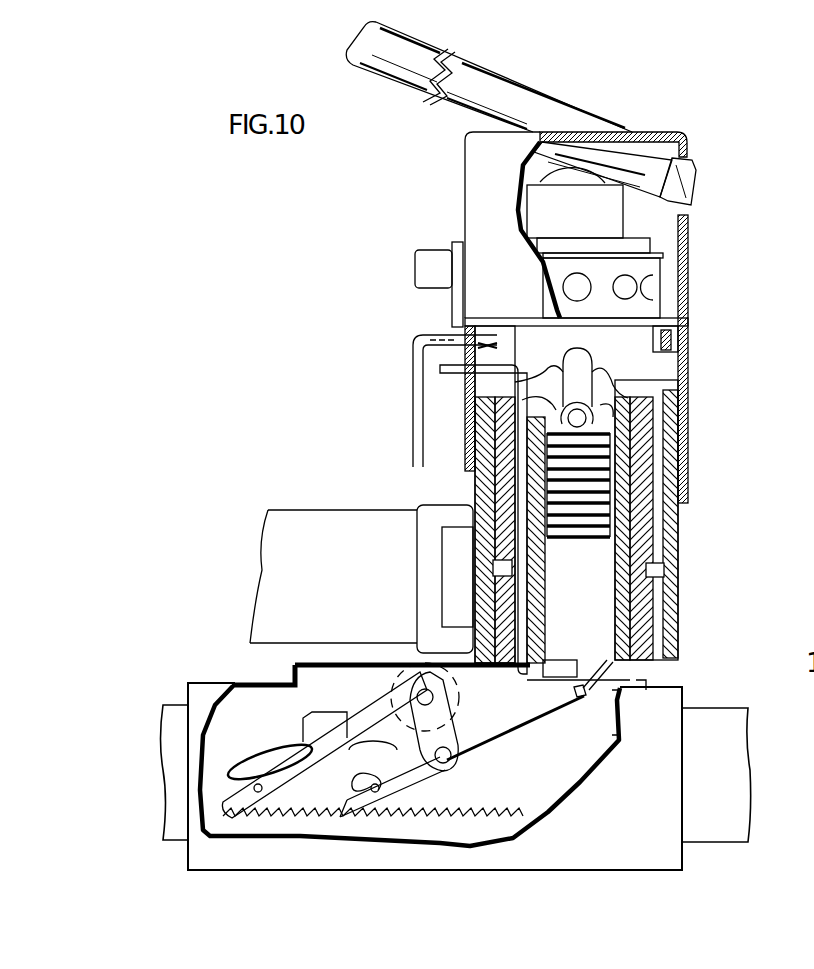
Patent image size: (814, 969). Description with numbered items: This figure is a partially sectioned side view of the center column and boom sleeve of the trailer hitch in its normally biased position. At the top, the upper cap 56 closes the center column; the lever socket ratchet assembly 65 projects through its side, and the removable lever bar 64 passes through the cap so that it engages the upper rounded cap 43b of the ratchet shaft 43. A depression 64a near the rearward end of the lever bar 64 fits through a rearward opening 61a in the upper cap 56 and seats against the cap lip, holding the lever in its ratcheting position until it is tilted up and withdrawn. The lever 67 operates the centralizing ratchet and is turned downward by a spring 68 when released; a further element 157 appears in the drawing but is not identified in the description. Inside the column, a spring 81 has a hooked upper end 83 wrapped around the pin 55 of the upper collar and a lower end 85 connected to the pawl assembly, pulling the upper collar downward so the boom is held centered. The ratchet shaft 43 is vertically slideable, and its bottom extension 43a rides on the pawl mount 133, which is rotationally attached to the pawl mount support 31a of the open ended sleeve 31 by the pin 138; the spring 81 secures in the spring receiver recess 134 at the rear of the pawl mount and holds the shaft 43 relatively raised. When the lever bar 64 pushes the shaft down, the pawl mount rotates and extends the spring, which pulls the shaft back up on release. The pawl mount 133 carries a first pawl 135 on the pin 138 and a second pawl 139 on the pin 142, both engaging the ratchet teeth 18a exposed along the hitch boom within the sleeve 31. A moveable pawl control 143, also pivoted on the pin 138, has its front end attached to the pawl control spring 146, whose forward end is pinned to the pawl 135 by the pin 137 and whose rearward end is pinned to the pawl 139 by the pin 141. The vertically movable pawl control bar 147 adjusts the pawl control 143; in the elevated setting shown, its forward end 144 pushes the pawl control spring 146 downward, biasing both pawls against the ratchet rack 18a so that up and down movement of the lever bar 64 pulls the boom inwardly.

The lever bar 64 is at (503, 93).
The upper rounded cap of the ratchet shaft 43b is at (588, 176).
The depression of the lever bar 64a is at (688, 157).
The rearward opening of the upper cap 61a is at (699, 203).
The upper cap 56 is at (466, 174).
The lever socket ratchet assembly 65 is at (413, 255).
The spring 68 is at (686, 332).
The hooked upper end of the spring 83 is at (575, 408).
The pin of the upper collar 55 is at (628, 400).
The rod 157 is at (445, 372).
The lever 67 is at (414, 430).
The spring 81 is at (613, 477).
The pawl control bar 147 is at (513, 462).
The pin 138 is at (417, 682).
The pawl mount support 31a is at (397, 675).
The ratchet shaft 43 is at (615, 618).
The bottom extension of the ratchet shaft 43a is at (537, 667).
The open ended sleeve 31 is at (208, 688).
The forward end of the pawl control 144 is at (303, 740).
The pawl control spring 146 is at (233, 773).
The pawl control 143 is at (345, 710).
The first pawl 135 is at (287, 772).
The pin 142 is at (453, 748).
The spring receiver recess 134 is at (643, 680).
The pawl mount 133 is at (540, 710).
The lower end of the spring 85 is at (613, 732).
The ratchet teeth 18a is at (503, 812).
The pin 137 is at (227, 800).
The pin 141 is at (357, 790).
The second pawl 139 is at (400, 782).